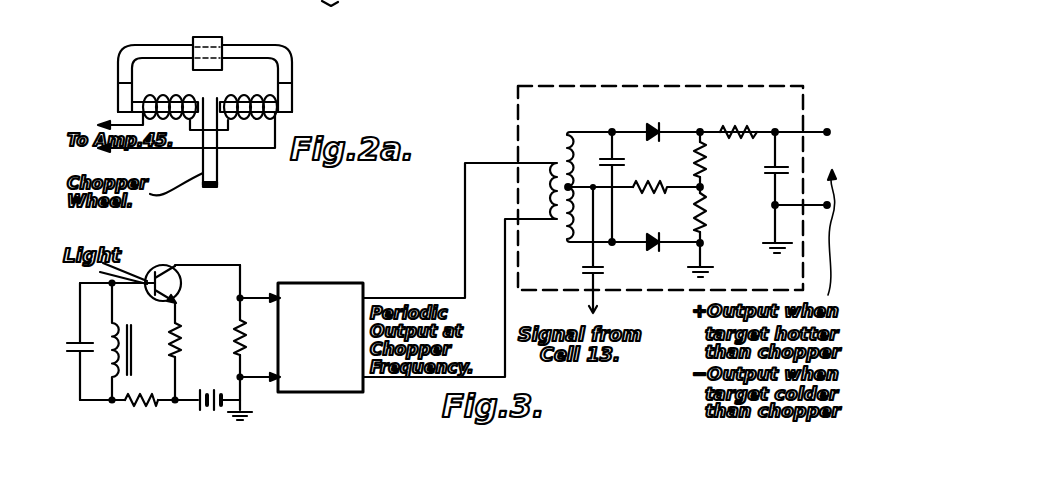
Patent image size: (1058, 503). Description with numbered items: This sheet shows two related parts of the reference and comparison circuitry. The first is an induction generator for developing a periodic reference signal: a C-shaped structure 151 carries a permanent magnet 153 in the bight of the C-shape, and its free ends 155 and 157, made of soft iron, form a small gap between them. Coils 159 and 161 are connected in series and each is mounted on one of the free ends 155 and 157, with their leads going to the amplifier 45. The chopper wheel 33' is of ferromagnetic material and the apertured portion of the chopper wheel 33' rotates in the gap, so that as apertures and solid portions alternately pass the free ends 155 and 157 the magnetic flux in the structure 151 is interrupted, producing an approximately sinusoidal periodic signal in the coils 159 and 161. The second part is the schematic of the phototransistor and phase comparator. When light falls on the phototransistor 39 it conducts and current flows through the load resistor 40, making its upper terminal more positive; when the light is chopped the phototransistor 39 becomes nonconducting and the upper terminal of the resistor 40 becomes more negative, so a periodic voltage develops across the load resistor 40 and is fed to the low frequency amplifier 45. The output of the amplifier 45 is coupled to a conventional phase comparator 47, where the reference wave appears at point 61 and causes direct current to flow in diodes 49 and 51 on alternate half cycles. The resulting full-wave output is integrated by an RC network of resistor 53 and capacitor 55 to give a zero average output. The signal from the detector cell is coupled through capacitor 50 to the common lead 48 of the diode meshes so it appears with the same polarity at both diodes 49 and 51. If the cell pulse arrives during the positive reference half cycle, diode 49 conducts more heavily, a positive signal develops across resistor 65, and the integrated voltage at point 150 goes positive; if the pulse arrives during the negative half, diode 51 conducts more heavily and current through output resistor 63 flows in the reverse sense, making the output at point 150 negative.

In FIG. 2A, the C-shaped structure 151 is at (303, 42).
In FIG. 2A, the permanent magnet 153 is at (226, 39).
In FIG. 2A, the free end 155 is at (121, 113).
In FIG. 2A, the free end 157 is at (292, 103).
In FIG. 2A, the coil 159 is at (172, 83).
In FIG. 2A, the coil 161 is at (245, 95).
In FIG. 2A, the chopper wheel 33' is at (236, 150).
In FIG. 3, the phototransistor 39 is at (220, 294).
In FIG. 3, the load resistor 40 is at (234, 340).
In FIG. 3, the low frequency amplifier 45 is at (306, 283).
In FIG. 3, the phase comparator 47 is at (573, 86).
In FIG. 3, the common lead 48 is at (599, 179).
In FIG. 3, the diode 49 is at (655, 129).
In FIG. 3, the capacitor 50 is at (583, 266).
In FIG. 3, the diode 51 is at (657, 246).
In FIG. 3, the resistor 53 is at (745, 118).
In FIG. 3, the capacitor 55 is at (767, 168).
In FIG. 3, the point 61 is at (610, 130).
In FIG. 3, the output resistor 63 is at (707, 213).
In FIG. 3, the resistor 65 is at (695, 157).
In FIG. 3, the point 150 is at (826, 121).